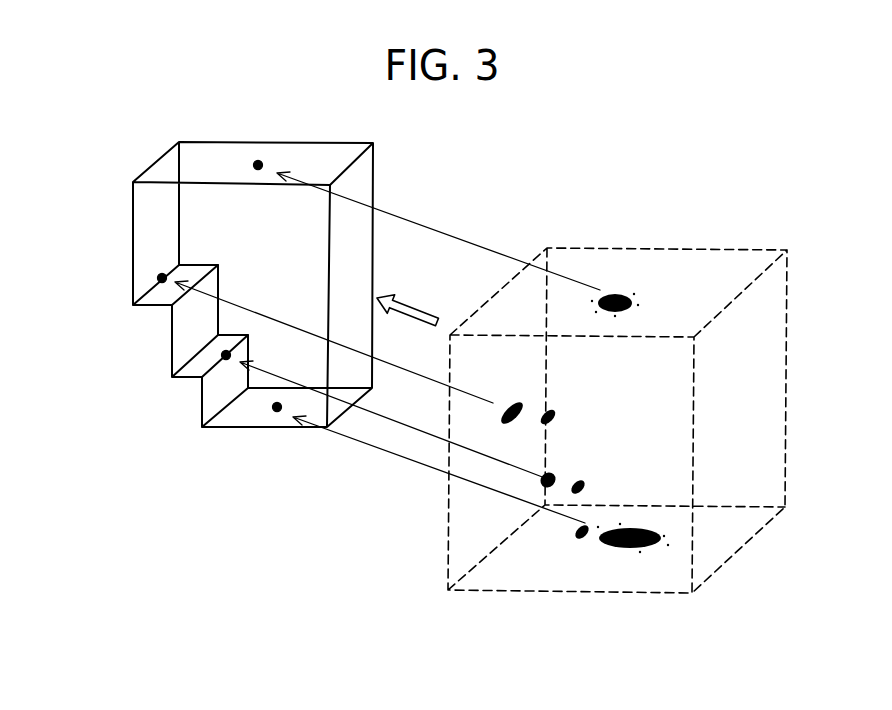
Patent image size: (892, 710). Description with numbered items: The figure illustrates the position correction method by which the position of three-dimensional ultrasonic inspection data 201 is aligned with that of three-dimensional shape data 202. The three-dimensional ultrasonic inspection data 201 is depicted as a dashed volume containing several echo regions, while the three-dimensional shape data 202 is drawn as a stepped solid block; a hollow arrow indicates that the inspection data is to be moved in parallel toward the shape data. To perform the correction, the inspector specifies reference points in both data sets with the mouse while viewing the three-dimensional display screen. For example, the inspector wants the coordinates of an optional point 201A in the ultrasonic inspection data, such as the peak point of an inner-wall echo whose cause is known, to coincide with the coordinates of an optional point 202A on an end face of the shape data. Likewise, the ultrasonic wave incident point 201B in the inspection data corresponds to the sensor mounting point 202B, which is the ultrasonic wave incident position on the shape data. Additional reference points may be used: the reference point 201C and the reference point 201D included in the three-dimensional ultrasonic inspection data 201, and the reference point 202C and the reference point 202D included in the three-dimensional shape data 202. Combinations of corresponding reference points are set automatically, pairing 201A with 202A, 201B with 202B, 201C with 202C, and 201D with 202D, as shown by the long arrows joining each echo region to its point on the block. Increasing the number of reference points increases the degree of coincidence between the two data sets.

The three-dimensional ultrasonic inspection data 201 is at (670, 248).
The reference point 201A is at (580, 481).
The ultrasonic wave incident point 201B is at (612, 290).
The reference point 201C is at (523, 398).
The reference point 201D is at (645, 530).
The three-dimensional shape data 202 is at (227, 430).
The reference point 202A is at (225, 355).
The sensor mounting point 202B is at (258, 165).
The reference point 202C is at (160, 277).
The reference point 202D is at (277, 411).